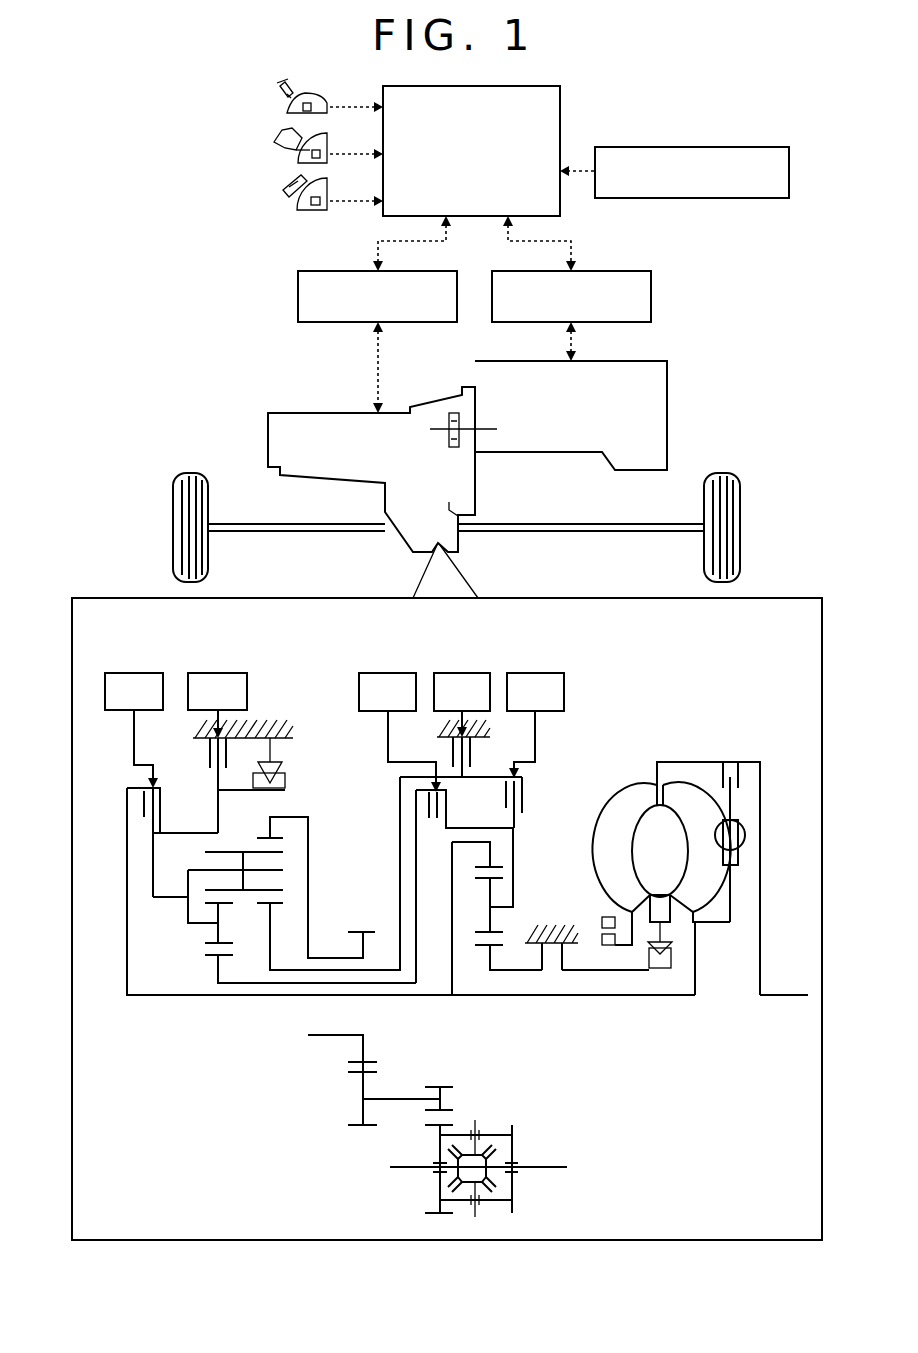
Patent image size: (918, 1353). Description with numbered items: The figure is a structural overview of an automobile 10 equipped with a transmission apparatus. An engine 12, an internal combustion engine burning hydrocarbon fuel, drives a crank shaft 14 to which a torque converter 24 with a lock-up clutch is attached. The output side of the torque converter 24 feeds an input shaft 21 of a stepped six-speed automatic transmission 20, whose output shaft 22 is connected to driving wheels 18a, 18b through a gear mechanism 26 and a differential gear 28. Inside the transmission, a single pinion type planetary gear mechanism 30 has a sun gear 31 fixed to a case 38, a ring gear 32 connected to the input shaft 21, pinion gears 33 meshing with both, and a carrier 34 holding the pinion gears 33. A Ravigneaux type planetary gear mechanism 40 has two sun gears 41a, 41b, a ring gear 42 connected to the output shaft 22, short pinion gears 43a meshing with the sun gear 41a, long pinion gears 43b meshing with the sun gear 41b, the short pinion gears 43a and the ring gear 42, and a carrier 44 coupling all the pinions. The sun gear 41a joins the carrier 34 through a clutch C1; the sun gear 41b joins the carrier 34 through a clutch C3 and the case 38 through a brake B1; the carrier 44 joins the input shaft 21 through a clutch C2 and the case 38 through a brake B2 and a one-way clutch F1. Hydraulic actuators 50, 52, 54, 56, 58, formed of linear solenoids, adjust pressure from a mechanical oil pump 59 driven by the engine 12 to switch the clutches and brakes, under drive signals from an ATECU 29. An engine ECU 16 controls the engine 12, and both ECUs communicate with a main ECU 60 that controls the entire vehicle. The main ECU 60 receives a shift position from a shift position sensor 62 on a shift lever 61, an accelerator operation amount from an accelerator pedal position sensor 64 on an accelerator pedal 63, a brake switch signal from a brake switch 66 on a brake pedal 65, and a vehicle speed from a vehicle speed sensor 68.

The automobile 10 is at (158, 98).
The engine 12 is at (668, 390).
The crank shaft 14 is at (773, 998).
The engine ECU 16 is at (652, 297).
The driving wheel 18a is at (741, 527).
The driving wheel 18b is at (172, 531).
The automatic transmission 20 is at (266, 431).
The input shaft 21 is at (658, 998).
The output shaft 22 is at (342, 955).
The torque converter 24 is at (638, 774).
The gear mechanism 26 is at (468, 1088).
The differential gear 28 is at (527, 1126).
The ATECU 29 is at (296, 298).
The single pinion type planetary gear mechanism 30 is at (567, 846).
The sun gear 31 is at (487, 948).
The ring gear 32 is at (498, 862).
The pinion gears 33 is at (500, 930).
The carrier 34 is at (511, 901).
The case 38 is at (275, 720).
The Ravigneaux type planetary gear mechanism 40 is at (165, 967).
The sun gear 41a is at (215, 965).
The sun gear 41b is at (265, 906).
The ring gear 42 is at (278, 832).
The short pinion gears 43a is at (215, 941).
The long pinion gears 43b is at (210, 850).
The carrier 44 is at (152, 881).
The hydraulic actuator 50 is at (386, 671).
The hydraulic actuator 52 is at (132, 671).
The hydraulic actuator 54 is at (534, 671).
The hydraulic actuator 56 is at (461, 671).
The hydraulic actuator 58 is at (216, 671).
The mechanical oil pump 59 is at (455, 410).
The main ECU 60 is at (561, 110).
The shift lever 61 is at (284, 92).
The shift position sensor 62 is at (303, 110).
The accelerator pedal 63 is at (280, 135).
The accelerator pedal position sensor 64 is at (312, 155).
The brake pedal 65 is at (288, 190).
The brake switch 66 is at (312, 201).
The vehicle speed sensor 68 is at (790, 172).
The brake B1 is at (472, 748).
The brake B2 is at (209, 746).
The clutch C1 is at (428, 800).
The clutch C2 is at (145, 790).
The clutch C3 is at (525, 785).
The one-way clutch F1 is at (281, 762).